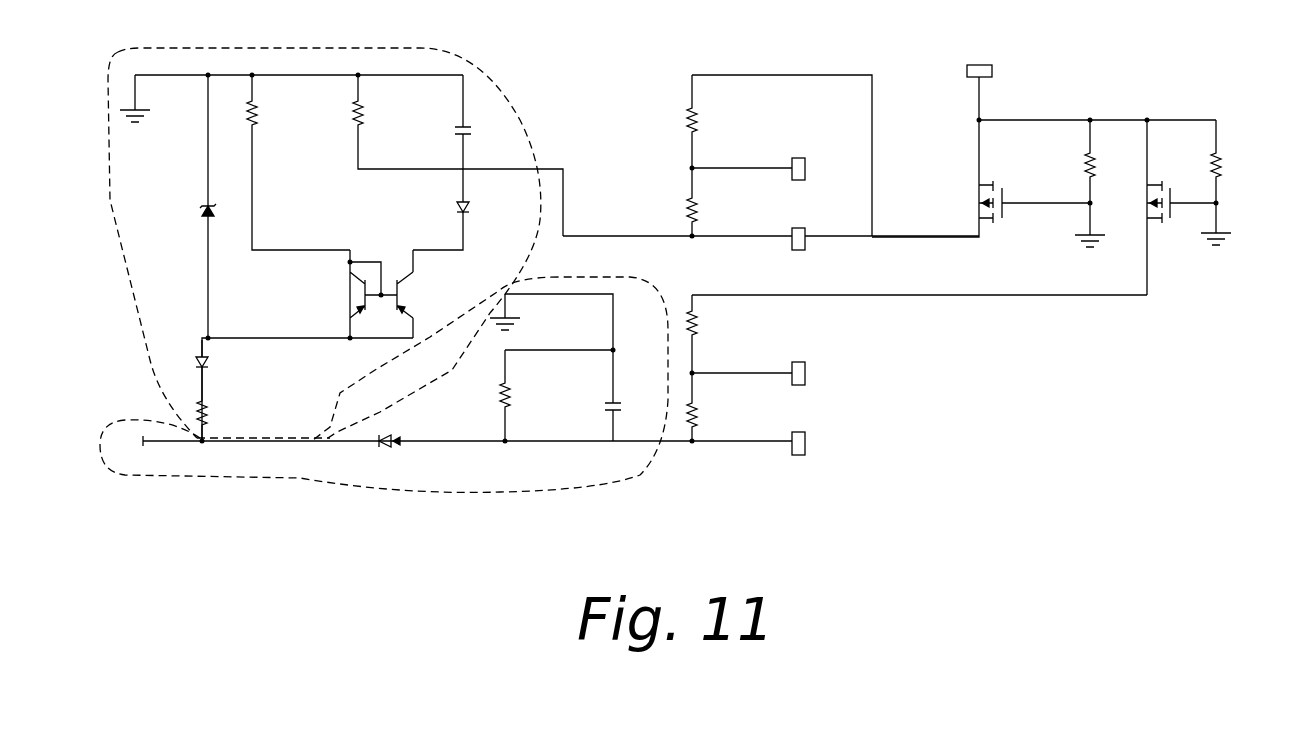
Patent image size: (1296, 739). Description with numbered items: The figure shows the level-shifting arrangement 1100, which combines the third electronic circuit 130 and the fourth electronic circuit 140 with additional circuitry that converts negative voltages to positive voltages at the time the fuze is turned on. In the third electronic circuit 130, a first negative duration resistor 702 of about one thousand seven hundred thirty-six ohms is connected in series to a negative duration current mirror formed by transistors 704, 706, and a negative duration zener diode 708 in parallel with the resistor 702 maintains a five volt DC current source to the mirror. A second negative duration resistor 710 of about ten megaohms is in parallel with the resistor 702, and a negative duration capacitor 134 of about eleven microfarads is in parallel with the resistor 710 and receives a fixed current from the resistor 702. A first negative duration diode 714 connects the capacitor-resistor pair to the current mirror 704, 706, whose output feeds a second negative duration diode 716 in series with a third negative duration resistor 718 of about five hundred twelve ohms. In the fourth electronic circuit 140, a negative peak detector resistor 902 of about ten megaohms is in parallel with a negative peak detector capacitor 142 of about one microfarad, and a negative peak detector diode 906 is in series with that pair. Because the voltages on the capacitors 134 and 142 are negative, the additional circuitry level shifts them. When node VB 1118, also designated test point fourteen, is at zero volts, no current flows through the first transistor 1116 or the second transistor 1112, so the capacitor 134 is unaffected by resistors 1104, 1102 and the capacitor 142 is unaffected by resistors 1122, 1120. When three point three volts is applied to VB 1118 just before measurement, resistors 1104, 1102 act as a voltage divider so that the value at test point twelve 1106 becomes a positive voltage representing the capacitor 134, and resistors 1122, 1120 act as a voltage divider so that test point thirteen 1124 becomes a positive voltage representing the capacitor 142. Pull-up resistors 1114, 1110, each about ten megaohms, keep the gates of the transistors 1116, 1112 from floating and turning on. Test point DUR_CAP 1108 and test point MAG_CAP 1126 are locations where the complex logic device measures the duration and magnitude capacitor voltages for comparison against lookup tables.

The combination of third and fourth electronic circuits and additional circuitry 1100 is at (828, 517).
The third electronic circuit 130 is at (489, 78).
The fourth electronic circuit 140 is at (553, 489).
The first negative duration resistor 702 is at (298, 162).
The second negative duration resistor 710 is at (408, 122).
The negative duration capacitor 134 is at (483, 122).
The negative duration zener diode 708 is at (188, 206).
The first negative duration diode 714 is at (461, 209).
The negative duration current mirror transistor 706 is at (347, 294).
The negative duration current mirror transistor 704 is at (415, 294).
The second negative duration diode 716 is at (216, 367).
The third negative duration resistor 718 is at (235, 416).
The negative peak detector diode 906 is at (388, 446).
The negative peak detector resistor 902 is at (542, 397).
The negative peak detector capacitor 142 is at (629, 412).
The resistor 1102 is at (723, 121).
The resistor 1104 is at (723, 202).
The test point 12 1106 is at (771, 168).
The test point DUR_CAP 1108 is at (817, 247).
The node VB 1118 is at (1001, 70).
The pull-up resistor 1114 is at (1055, 183).
The first transistor 1116 is at (993, 222).
The pull-up resistor 1110 is at (1247, 182).
The second transistor 1112 is at (1161, 223).
The resistor 1120 is at (718, 334).
The resistor 1122 is at (718, 407).
The test point 13 1124 is at (773, 374).
The test point MAG_CAP 1126 is at (819, 446).